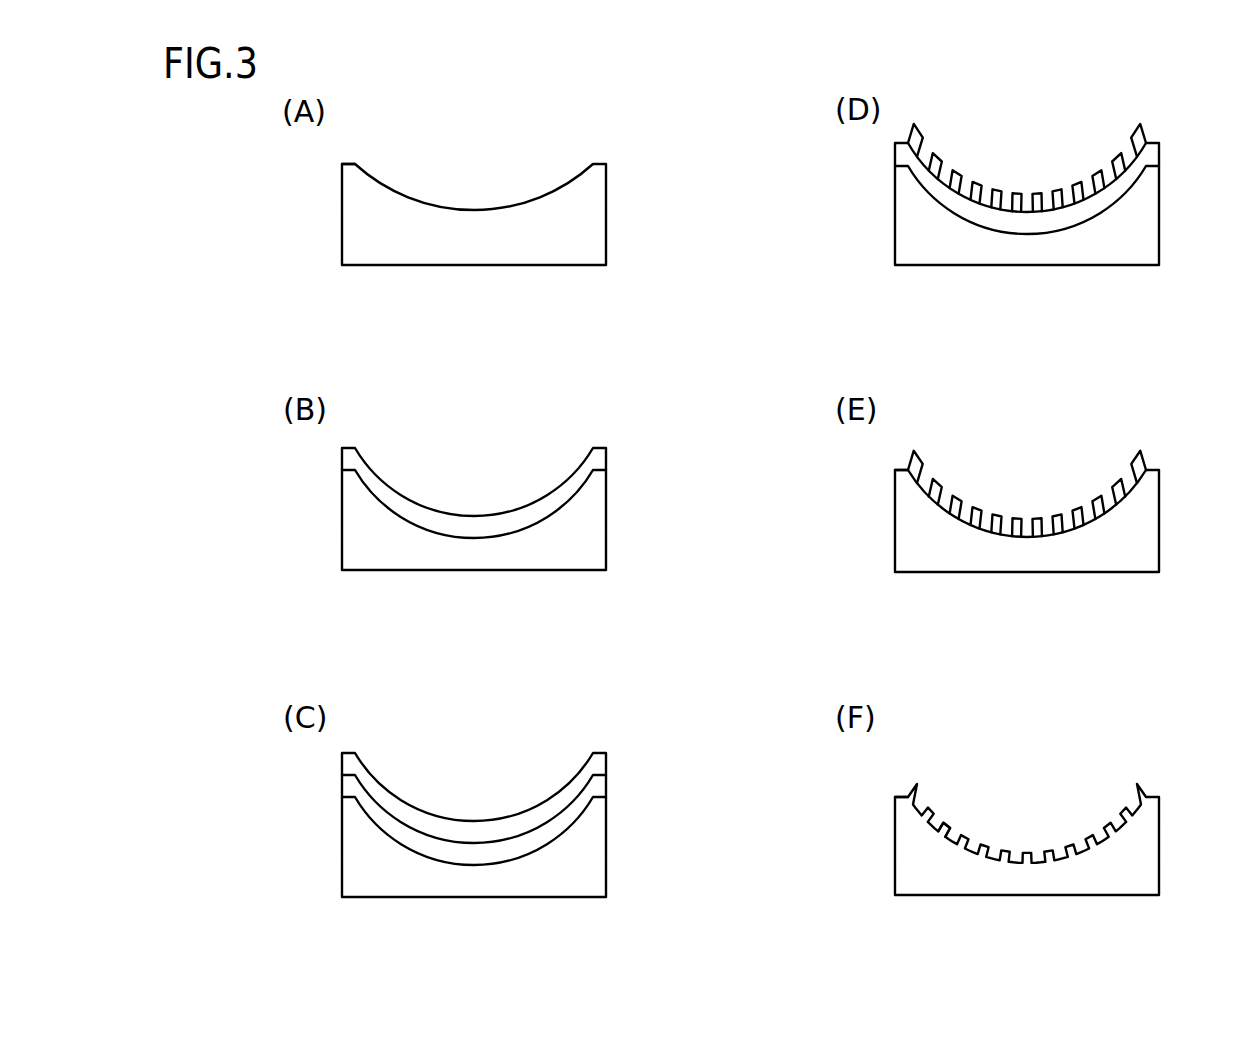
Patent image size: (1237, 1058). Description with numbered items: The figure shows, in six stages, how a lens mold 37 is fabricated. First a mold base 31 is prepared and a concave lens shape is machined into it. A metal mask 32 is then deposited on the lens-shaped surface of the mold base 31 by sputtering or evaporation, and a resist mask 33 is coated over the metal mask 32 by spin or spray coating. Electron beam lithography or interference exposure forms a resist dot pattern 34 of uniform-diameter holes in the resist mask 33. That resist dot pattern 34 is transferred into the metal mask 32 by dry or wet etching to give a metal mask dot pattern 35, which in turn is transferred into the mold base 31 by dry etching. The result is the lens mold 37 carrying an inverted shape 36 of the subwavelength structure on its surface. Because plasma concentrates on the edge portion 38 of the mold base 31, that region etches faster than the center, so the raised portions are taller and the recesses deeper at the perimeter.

The mold base 31 is at (606, 210).
The metal mask 32 is at (606, 455).
The resist mask 33 is at (578, 772).
The resist dot pattern 34 is at (1144, 134).
The metal mask dot pattern 35 is at (1144, 460).
The inverted shape of the SWS 36 is at (957, 826).
The lens mold 37 is at (1159, 832).
The edge portion 38 is at (343, 163).